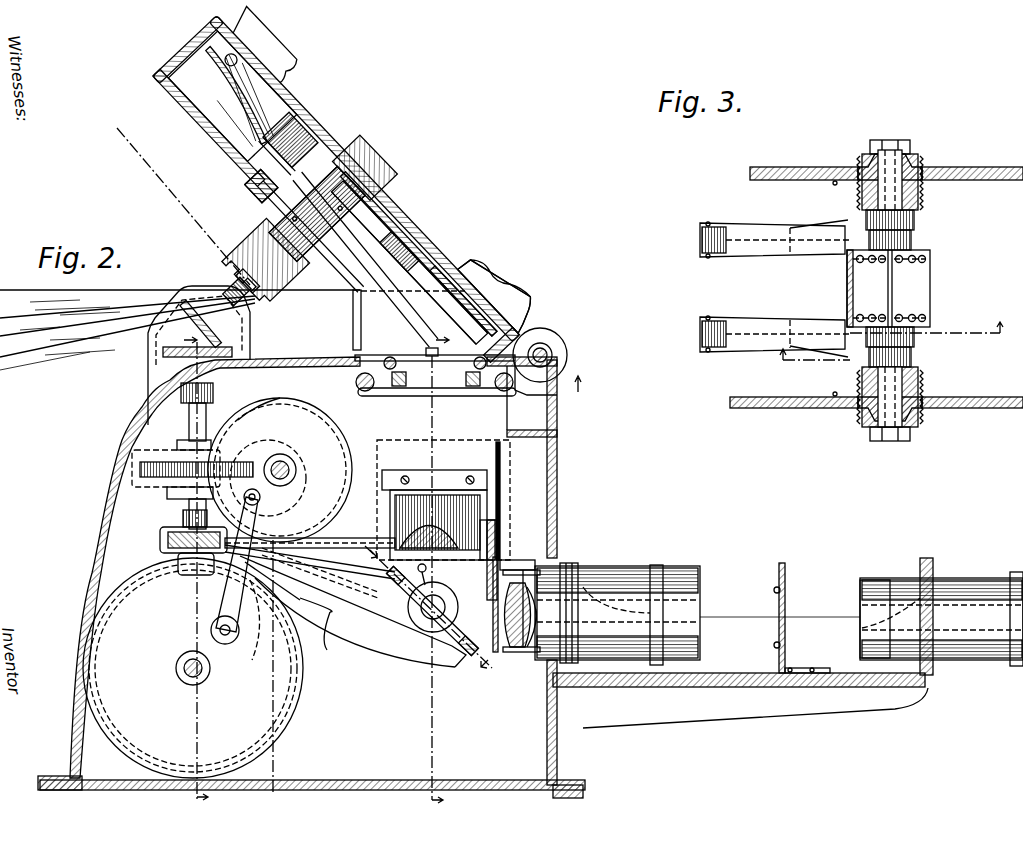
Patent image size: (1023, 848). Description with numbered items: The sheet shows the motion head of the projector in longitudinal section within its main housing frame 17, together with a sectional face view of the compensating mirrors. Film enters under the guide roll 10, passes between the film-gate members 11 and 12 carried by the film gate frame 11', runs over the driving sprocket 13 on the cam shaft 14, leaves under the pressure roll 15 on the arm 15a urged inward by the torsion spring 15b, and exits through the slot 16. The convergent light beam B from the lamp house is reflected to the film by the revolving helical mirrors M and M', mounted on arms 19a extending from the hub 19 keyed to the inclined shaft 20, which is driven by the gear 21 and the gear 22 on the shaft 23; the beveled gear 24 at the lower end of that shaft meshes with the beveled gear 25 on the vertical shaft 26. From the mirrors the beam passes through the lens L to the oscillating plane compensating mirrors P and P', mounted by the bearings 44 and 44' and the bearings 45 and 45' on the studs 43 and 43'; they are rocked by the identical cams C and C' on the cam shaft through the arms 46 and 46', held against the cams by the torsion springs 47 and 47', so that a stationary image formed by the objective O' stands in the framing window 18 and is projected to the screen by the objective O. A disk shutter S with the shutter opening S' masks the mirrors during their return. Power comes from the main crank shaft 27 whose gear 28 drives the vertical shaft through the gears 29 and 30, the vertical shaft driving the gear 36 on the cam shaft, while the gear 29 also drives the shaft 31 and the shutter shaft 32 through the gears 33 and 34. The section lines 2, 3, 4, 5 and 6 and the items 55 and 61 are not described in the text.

In FIG. 2, the shaft axis line 61 is at (173, 202).
In FIG. 2, the gear 22 is at (232, 180).
In FIG. 2, the gear 21 is at (262, 228).
In FIG. 2, the shaft 23 is at (258, 280).
In FIG. 2, the beveled gear 24 is at (172, 300).
In FIG. 2, the section line 5- 5 is at (189, 562).
In FIG. 2, the beveled gear 25 is at (172, 358).
In FIG. 2, the light beam B is at (232, 330).
In FIG. 2, the vertical shaft 26 is at (189, 428).
In FIG. 2, the worm gear casing 55 is at (135, 467).
In FIG. 2, the gear 36 is at (254, 427).
In FIG. 2, the driving sprocket 13 is at (280, 455).
In FIG. 2, the cam shaft 14 is at (291, 472).
In FIG. 2, the pressure roll 15 is at (262, 502).
In FIG. 2, the cam C is at (280, 470).
In FIG. 2, the cam C' is at (292, 470).
In FIG. 2, the gear 29 is at (182, 525).
In FIG. 2, the gear 30 is at (168, 544).
In FIG. 2, the main housing frame 17 is at (85, 556).
In FIG. 3, the main housing frame 17 is at (778, 408).
In FIG. 2, the gear 28 is at (121, 592).
In FIG. 2, the arm 15a is at (213, 605).
In FIG. 2, the torsion spring 15b is at (256, 640).
In FIG. 2, the main crank shaft 27 is at (178, 670).
In FIG. 2, the slot 16 is at (282, 782).
In FIG. 2, the torsion spring 47 is at (310, 618).
In FIG. 3, the torsion spring 47 is at (912, 180).
In FIG. 2, the arm 46 is at (353, 619).
In FIG. 3, the arm 46 is at (775, 255).
In FIG. 2, the arm 46' is at (357, 656).
In FIG. 3, the arm 46' is at (775, 325).
In FIG. 2, the torsion spring 47' is at (320, 606).
In FIG. 3, the torsion spring 47' is at (870, 397).
In FIG. 2, the section line 4- 4 is at (443, 566).
In FIG. 2, the shaft 31 is at (346, 545).
In FIG. 2, the lens L is at (432, 500).
In FIG. 2, the disk shutter S is at (506, 534).
In FIG. 2, the shutter opening S' is at (513, 501).
In FIG. 2, the gear 33 is at (488, 525).
In FIG. 2, the gear 34 is at (503, 528).
In FIG. 2, the shaft 32 is at (510, 535).
In FIG. 2, the section line 6 is at (584, 389).
In FIG. 2, the guide roll 10 is at (548, 346).
In FIG. 2, the film-gate member 11 is at (411, 399).
In FIG. 2, the film gate frame 11' is at (437, 401).
In FIG. 2, the film-gate member 12 is at (484, 360).
In FIG. 2, the hub 19 is at (338, 165).
In FIG. 2, the arm 19a is at (420, 245).
In FIG. 2, the inclined shaft 20 is at (372, 168).
In FIG. 2, the helical mirror M is at (463, 277).
In FIG. 2, the helical mirror M' is at (500, 282).
In FIG. 2, the compensating mirror P is at (433, 610).
In FIG. 3, the compensating mirror P is at (865, 288).
In FIG. 2, the compensating mirror P' is at (445, 607).
In FIG. 3, the compensating mirror P' is at (934, 289).
In FIG. 2, the section line 3- 3 is at (427, 602).
In FIG. 2, the objective O' is at (617, 603).
In FIG. 2, the framing window 18 is at (784, 598).
In FIG. 2, the objective O is at (941, 611).
In FIG. 3, the stud 43 is at (920, 145).
In FIG. 3, the bearing 44 is at (918, 220).
In FIG. 3, the bearing 45 is at (922, 240).
In FIG. 3, the section line 2- 2 is at (890, 344).
In FIG. 3, the bearing 44' is at (919, 341).
In FIG. 3, the bearing 45' is at (923, 364).
In FIG. 3, the stud 43' is at (910, 434).